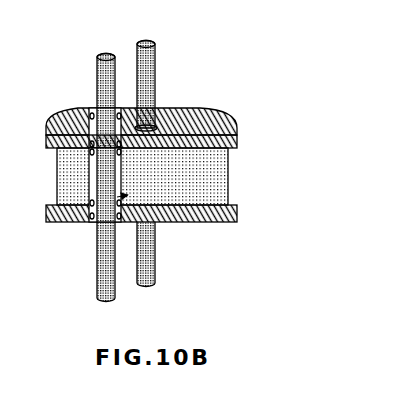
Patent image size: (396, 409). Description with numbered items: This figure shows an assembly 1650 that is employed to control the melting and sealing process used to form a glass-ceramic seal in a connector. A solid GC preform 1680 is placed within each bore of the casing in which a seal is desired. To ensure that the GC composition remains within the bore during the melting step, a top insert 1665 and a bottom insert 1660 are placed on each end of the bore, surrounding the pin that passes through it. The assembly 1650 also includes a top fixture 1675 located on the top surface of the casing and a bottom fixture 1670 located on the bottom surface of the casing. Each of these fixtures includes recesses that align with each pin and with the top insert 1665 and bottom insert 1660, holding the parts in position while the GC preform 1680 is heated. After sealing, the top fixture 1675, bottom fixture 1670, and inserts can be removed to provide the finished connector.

The assembly 1650 is at (203, 40).
The top insert 1665 is at (83, 112).
The top fixture 1675 is at (240, 140).
The bottom fixture 1670 is at (240, 214).
The bottom insert 1660 is at (94, 224).
The GC preform 1680 is at (142, 208).